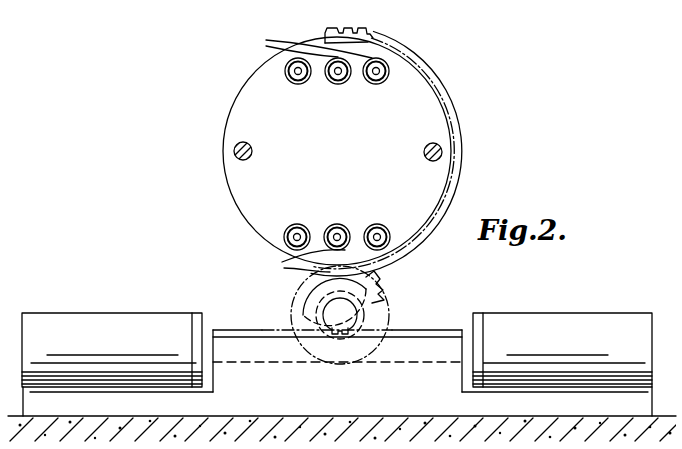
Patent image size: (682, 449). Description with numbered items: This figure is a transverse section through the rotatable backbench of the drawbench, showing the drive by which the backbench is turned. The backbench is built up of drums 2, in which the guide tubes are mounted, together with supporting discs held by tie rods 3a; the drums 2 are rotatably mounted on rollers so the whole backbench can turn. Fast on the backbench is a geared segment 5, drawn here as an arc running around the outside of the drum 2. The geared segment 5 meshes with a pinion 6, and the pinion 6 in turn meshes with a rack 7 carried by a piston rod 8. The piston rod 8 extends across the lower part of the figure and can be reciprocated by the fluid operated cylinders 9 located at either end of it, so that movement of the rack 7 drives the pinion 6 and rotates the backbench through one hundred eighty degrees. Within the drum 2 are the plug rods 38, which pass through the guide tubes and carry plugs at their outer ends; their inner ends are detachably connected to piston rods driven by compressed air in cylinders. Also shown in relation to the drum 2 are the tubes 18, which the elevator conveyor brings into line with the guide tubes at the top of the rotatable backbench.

The drum 2 is at (242, 127).
The tie rod 3a is at (234, 158).
The geared segment 5 is at (462, 122).
The pinion 6 is at (381, 289).
The rack 7 is at (363, 327).
The piston rod 8 is at (209, 330).
The fluid operated cylinder 9 is at (115, 324).
The tube 18 is at (306, 155).
The plug rod 38 is at (370, 82).